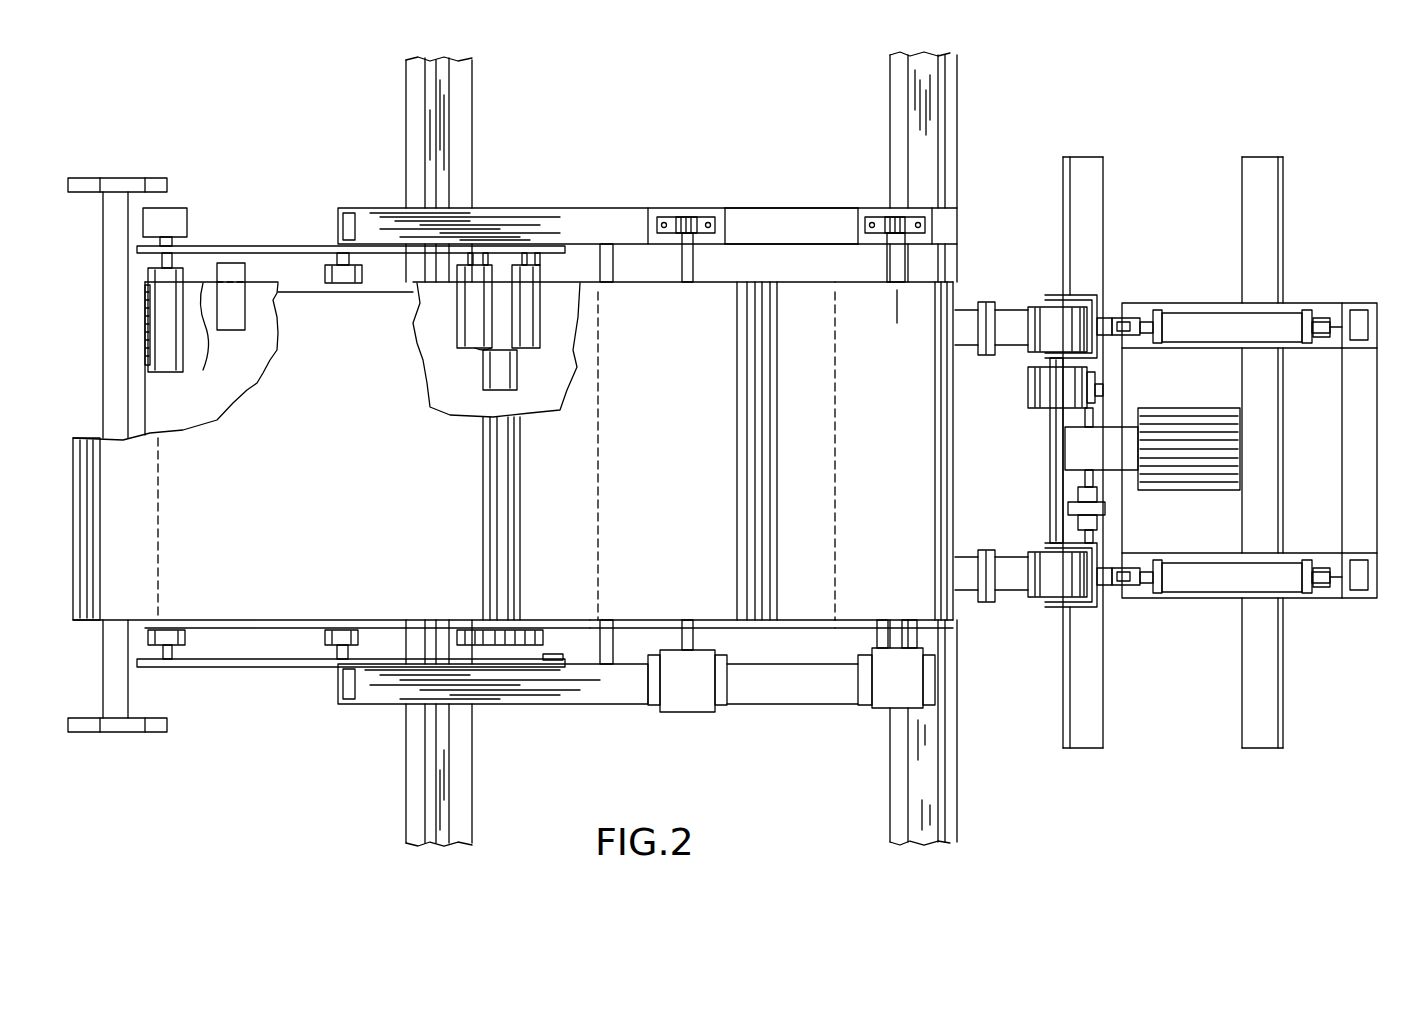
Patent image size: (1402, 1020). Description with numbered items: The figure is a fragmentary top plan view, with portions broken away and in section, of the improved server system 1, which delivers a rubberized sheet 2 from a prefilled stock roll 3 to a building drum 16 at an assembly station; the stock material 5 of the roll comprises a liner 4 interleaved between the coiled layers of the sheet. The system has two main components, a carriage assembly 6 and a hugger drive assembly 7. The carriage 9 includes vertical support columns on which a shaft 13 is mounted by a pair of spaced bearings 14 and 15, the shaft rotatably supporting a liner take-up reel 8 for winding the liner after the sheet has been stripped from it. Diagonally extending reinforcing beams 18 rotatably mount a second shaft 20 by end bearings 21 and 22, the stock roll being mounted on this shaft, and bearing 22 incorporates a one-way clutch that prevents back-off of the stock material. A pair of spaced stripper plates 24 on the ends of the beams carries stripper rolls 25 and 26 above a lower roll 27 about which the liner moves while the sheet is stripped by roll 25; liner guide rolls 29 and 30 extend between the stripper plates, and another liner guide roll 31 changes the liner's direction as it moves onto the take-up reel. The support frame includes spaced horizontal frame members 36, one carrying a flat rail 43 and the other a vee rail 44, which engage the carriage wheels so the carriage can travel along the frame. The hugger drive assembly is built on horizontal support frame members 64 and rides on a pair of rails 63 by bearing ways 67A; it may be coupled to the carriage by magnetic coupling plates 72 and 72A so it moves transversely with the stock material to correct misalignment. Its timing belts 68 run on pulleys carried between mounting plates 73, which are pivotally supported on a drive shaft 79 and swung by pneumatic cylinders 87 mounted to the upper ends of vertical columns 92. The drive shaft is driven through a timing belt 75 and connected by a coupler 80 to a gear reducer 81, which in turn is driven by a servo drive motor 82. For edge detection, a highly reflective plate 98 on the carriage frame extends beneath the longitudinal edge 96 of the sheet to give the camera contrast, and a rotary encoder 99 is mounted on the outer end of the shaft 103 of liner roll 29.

The server system 1 is at (560, 194).
The rubberized sheet 2 is at (357, 505).
The prefilled stock roll 3 is at (738, 282).
The liner 4 is at (871, 528).
The stock material 5 is at (641, 594).
The carriage assembly 6 is at (376, 710).
The hugger drive assembly 7 is at (1123, 280).
The liner take-up reel 8 is at (923, 275).
The carriage 9 is at (400, 201).
The shaft 13 is at (892, 257).
The bearing 14 is at (892, 217).
The bearing 15 is at (905, 690).
The building drum 16 is at (71, 450).
The reinforcing beam 18 is at (813, 222).
The second shaft 20 is at (688, 637).
The end bearing 21 is at (684, 222).
The end bearing 22 is at (678, 682).
The stripper plate 24 is at (291, 246).
The stripper roll 25 is at (523, 303).
The stripper roll 26 is at (470, 317).
The lower roll 27 is at (497, 365).
The liner guide roll 29 is at (165, 343).
The liner guide roll 30 is at (342, 641).
The liner guide roll 31 is at (613, 267).
The horizontal frame member 36 is at (410, 808).
The flat rail 43 is at (927, 92).
The vee rail 44 is at (443, 107).
The rail 63 is at (1083, 173).
The horizontal support frame member 64 is at (1193, 303).
The bearing way 67A is at (1268, 686).
The timing belt 68 is at (1038, 332).
The magnetic coupling plate 72 is at (995, 318).
The magnetic coupling plate 72A is at (975, 328).
The mounting plate 73 is at (1078, 295).
The timing belt 75 is at (1047, 390).
The drive shaft 79 is at (1100, 417).
The coupler 80 is at (1100, 517).
The gear reducer 81 is at (1087, 458).
The servo drive motor 82 is at (1223, 462).
The pneumatic cylinder 87 is at (1205, 322).
The vertical column 92 is at (1358, 303).
The edge 96 is at (363, 288).
The reflective plate 98 is at (232, 317).
The rotary encoder 99 is at (177, 221).
The shaft 103 is at (163, 262).